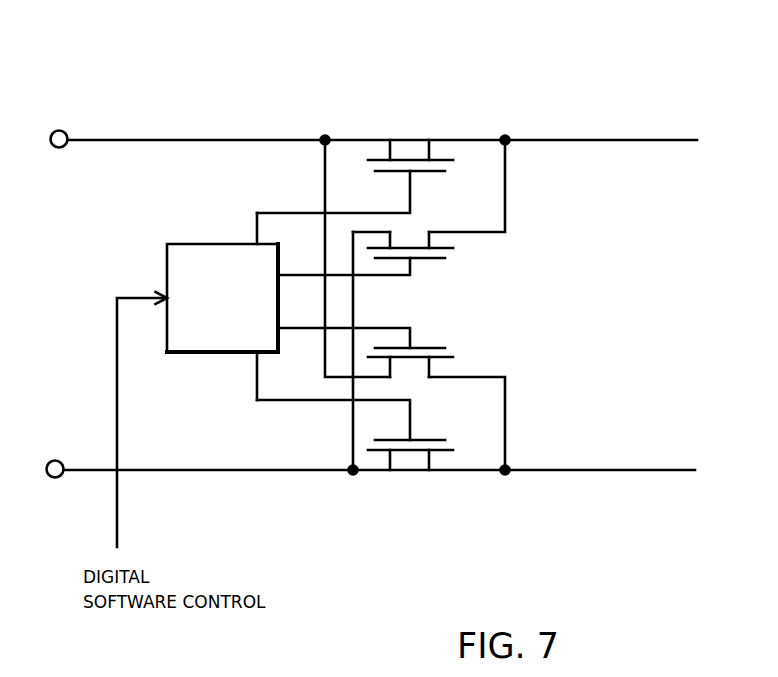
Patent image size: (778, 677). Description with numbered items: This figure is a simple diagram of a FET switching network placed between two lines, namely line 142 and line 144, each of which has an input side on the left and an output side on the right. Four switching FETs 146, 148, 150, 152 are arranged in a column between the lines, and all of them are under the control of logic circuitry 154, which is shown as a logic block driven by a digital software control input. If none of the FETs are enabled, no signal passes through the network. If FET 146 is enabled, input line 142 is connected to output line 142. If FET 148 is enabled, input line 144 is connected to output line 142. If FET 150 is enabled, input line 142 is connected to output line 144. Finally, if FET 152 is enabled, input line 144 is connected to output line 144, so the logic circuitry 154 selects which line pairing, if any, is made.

The line 142 is at (140, 140).
The line 144 is at (98, 469).
The switching FET 146 is at (411, 133).
The switching FET 148 is at (462, 258).
The switching FET 150 is at (460, 348).
The switching FET 152 is at (404, 477).
The logic circuitry 154 is at (167, 262).